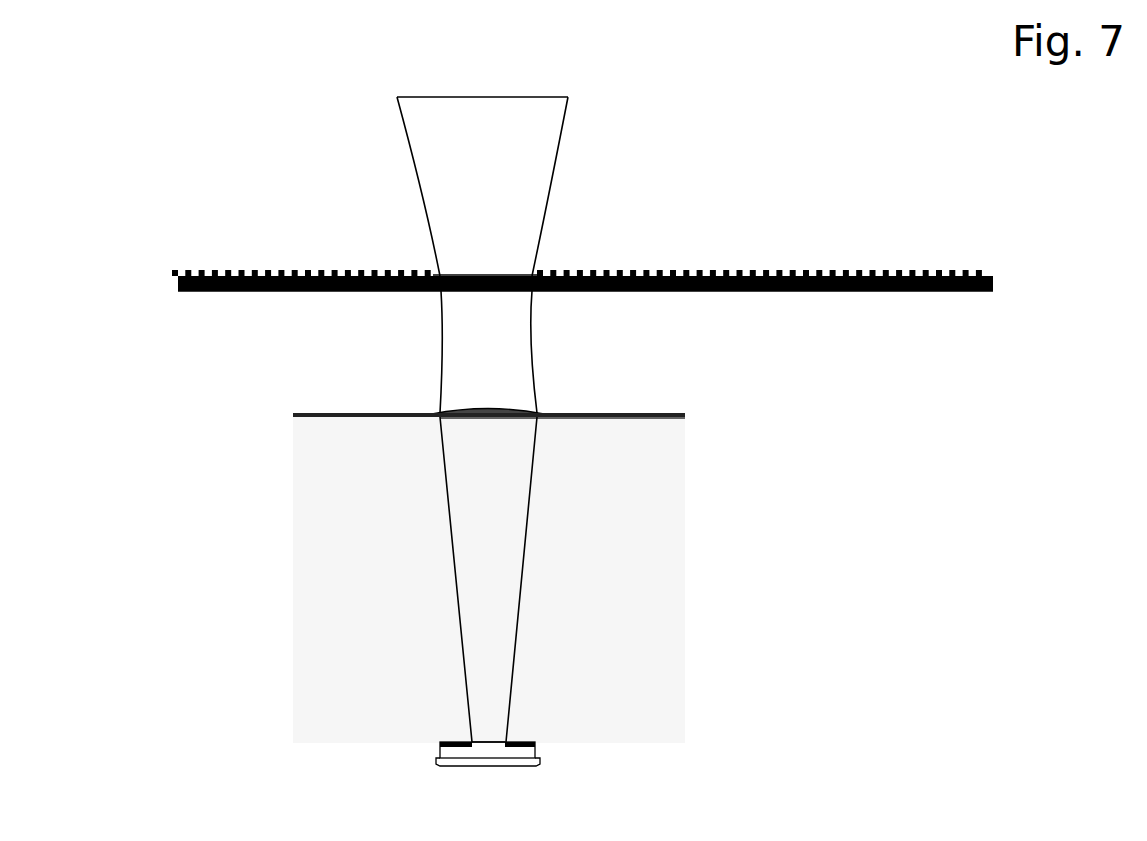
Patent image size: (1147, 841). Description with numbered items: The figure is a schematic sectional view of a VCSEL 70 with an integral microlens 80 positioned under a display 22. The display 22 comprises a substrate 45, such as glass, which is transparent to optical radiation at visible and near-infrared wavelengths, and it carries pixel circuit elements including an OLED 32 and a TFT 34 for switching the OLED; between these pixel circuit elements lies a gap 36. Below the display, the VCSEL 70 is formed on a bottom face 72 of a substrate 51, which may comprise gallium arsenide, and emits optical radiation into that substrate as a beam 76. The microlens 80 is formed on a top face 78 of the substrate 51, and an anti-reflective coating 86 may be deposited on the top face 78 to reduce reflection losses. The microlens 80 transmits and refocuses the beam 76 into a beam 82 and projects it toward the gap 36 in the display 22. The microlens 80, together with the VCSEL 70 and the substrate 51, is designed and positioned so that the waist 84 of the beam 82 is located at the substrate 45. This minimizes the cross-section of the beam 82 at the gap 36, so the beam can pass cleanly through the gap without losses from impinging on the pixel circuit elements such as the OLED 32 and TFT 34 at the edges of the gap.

The display 22 is at (585, 278).
The OLED 32 is at (632, 266).
The TFT 34 is at (759, 273).
The gap 36 is at (500, 273).
The substrate 45 is at (953, 292).
The substrate 51 is at (642, 578).
The VCSEL 70 is at (515, 752).
The bottom face 72 is at (625, 738).
The beam 76 is at (505, 538).
The top face 78 is at (590, 418).
The microlens 80 is at (500, 410).
The beam 82 is at (512, 358).
The waist 84 is at (483, 297).
The anti-reflective coating 86 is at (318, 413).